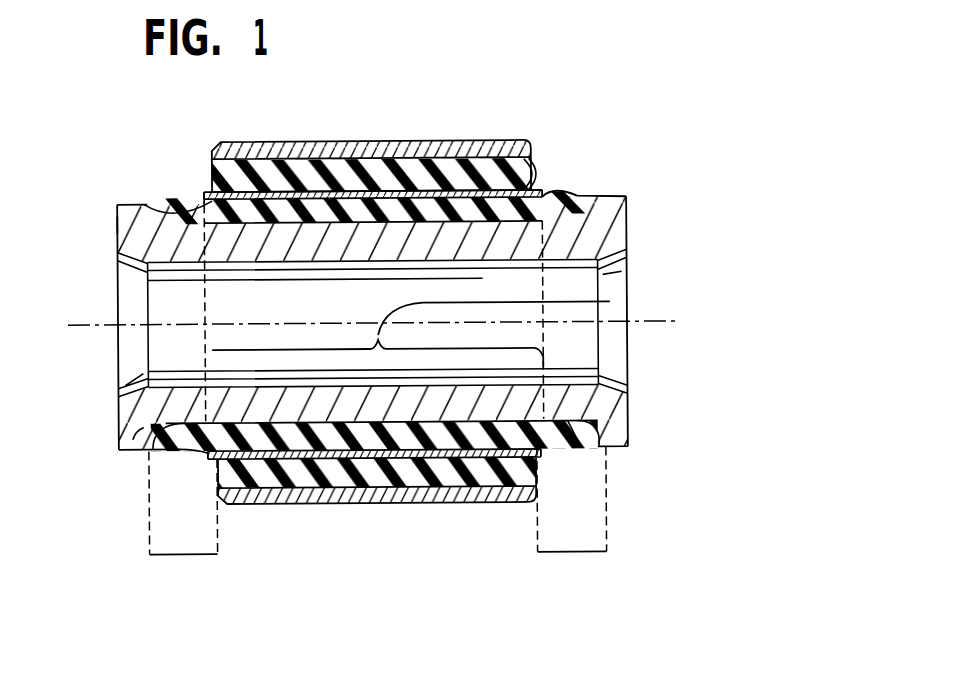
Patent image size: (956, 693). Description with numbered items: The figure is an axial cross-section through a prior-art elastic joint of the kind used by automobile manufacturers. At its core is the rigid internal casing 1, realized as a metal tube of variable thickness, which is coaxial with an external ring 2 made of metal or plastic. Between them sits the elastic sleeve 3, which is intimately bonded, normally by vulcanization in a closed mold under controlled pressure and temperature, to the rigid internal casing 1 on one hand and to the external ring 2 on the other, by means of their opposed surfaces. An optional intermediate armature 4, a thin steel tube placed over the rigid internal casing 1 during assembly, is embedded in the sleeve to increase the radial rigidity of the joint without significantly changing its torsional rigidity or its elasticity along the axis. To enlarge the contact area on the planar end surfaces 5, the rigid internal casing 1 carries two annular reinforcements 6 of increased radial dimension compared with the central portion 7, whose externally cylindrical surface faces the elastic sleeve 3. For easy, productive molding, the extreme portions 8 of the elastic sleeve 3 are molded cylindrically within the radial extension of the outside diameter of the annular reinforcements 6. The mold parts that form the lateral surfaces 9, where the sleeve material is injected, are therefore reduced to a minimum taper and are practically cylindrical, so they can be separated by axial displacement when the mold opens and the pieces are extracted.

The rigid internal casing 1 is at (563, 239).
The external ring 2 is at (430, 150).
The elastic sleeve 3 is at (197, 223).
The intermediate armature 4 is at (357, 462).
The planar end surfaces 5 is at (112, 226).
The annular reinforcements 6 is at (131, 440).
The central portion 7 is at (610, 303).
The extreme portions 8 is at (182, 553).
The lateral surfaces 9 is at (560, 165).